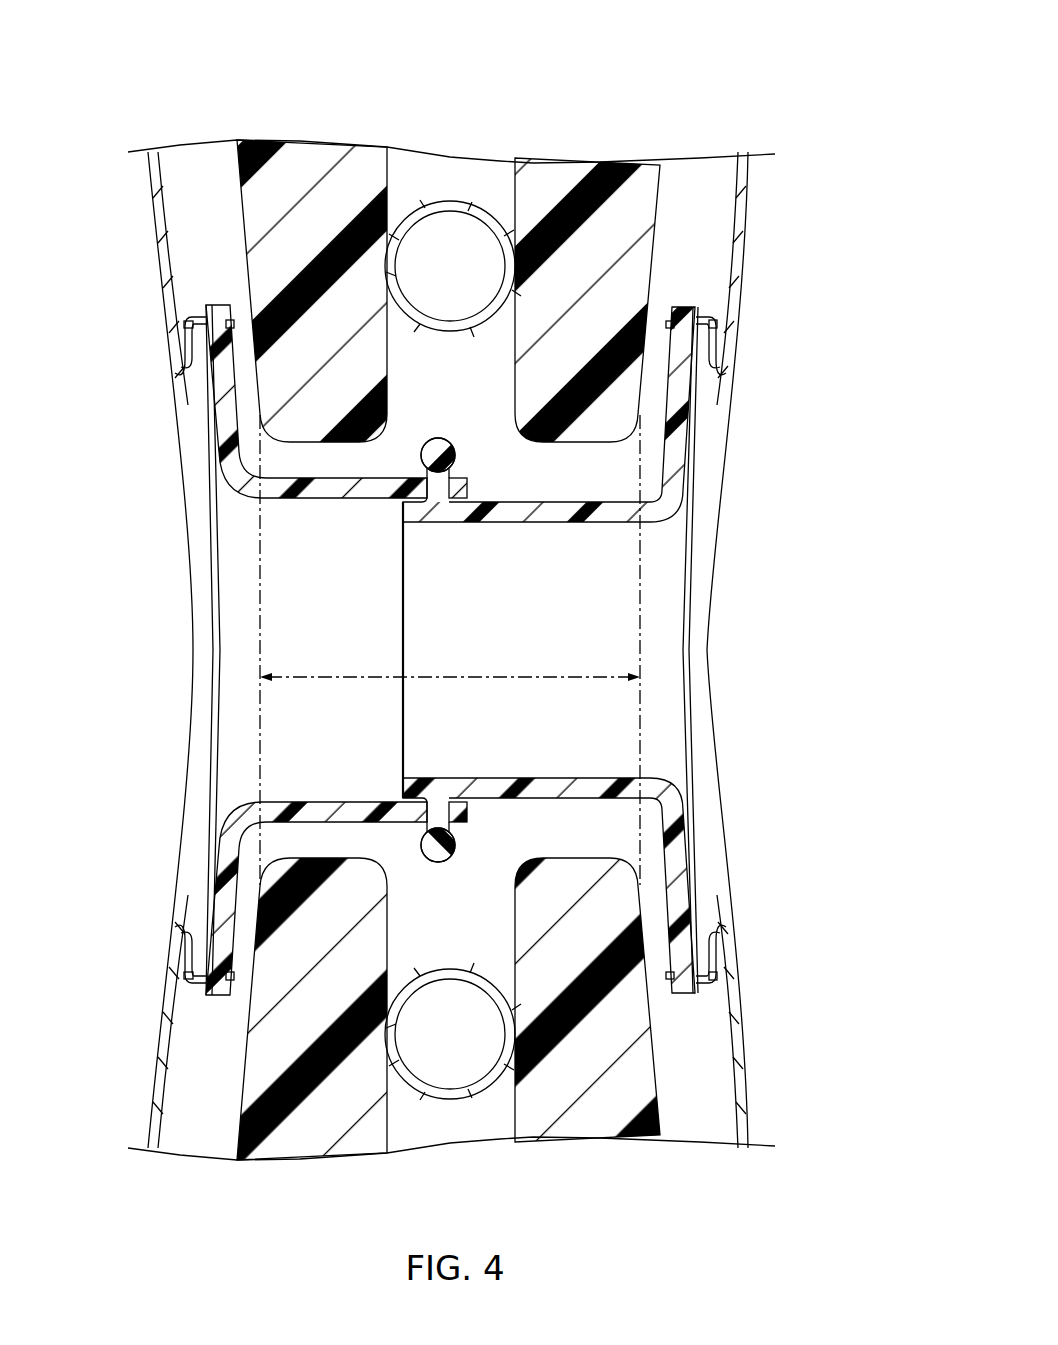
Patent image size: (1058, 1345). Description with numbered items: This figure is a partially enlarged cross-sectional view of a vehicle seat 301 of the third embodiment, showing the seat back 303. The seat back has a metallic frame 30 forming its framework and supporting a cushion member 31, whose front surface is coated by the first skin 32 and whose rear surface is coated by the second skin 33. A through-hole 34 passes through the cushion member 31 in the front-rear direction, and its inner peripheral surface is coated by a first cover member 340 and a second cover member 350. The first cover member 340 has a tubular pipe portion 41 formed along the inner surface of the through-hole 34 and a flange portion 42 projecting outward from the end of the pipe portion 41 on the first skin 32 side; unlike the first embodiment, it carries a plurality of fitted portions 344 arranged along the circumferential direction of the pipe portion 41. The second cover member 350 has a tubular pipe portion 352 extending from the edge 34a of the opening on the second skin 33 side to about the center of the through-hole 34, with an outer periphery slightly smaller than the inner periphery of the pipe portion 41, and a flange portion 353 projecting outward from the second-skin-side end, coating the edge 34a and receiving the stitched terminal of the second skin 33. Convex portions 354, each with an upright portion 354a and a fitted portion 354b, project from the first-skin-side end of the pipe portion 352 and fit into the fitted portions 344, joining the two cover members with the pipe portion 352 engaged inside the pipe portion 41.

The frame 30 is at (445, 202).
The cushion member 31 is at (305, 152).
The first skin 32 is at (150, 250).
The second skin 33 is at (752, 206).
The through-hole 34 is at (455, 672).
The edge of the opening of the through-hole 34a is at (265, 475).
The pipe portion 41 is at (347, 490).
The flange portion 42 is at (222, 437).
The vehicle seat 301 is at (822, 98).
The seat back 303 is at (815, 282).
The first cover member 340 is at (160, 620).
The fitted portion 344 is at (430, 508).
The second cover member 350 is at (752, 630).
The pipe portion 352 is at (515, 512).
The flange portion 353 is at (683, 390).
The convex portion 354 is at (456, 408).
The upright portion 354a is at (468, 488).
The fitted portion 354b is at (436, 440).